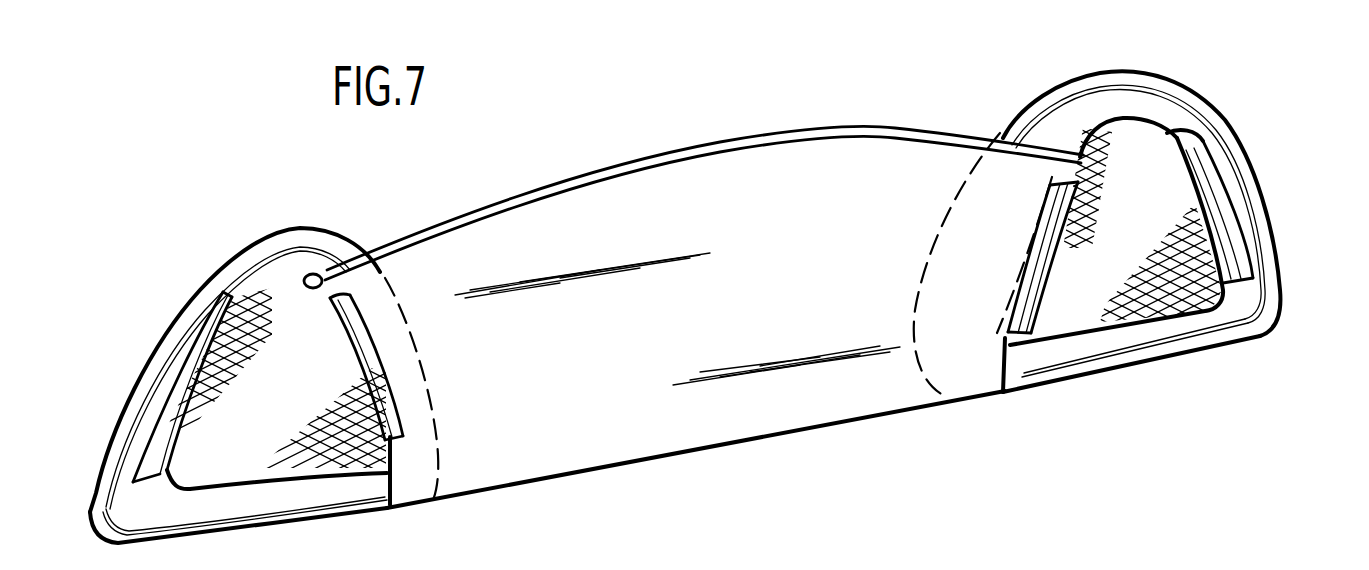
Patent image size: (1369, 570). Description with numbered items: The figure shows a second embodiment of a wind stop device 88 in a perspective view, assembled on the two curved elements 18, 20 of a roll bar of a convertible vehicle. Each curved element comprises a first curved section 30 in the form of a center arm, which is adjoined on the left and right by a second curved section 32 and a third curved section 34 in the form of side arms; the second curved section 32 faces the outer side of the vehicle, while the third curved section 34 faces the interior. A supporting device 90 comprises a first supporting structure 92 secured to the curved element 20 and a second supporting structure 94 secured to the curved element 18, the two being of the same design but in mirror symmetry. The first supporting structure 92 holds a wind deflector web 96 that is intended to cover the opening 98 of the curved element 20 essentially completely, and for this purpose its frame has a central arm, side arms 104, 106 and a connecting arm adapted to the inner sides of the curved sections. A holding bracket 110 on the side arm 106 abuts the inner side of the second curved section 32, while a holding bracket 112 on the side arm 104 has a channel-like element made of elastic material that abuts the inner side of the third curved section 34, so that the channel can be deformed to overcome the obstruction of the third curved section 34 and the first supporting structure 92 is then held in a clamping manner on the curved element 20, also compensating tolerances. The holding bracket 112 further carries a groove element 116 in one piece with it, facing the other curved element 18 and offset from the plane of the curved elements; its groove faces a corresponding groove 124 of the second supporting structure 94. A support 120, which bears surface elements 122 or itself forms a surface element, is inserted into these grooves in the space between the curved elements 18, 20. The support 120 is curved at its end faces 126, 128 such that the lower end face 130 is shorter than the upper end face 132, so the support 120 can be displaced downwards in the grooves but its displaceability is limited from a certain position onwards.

The curved element 18 is at (176, 292).
The curved element 20 is at (1252, 136).
The first curved section 30 is at (1097, 85).
The second curved section 32 is at (1242, 187).
The third curved section 34 is at (993, 197).
The wind stop device 88 is at (714, 125).
The supporting device 90 is at (352, 213).
The first supporting structure 92 is at (1180, 310).
The second supporting structure 94 is at (263, 467).
The wind deflector web 96 is at (1182, 137).
The opening 98 is at (1243, 140).
The side arm 104 is at (1000, 338).
The side arm 106 is at (1250, 327).
The holding bracket 110 is at (1235, 262).
The holding bracket 112 is at (1003, 265).
The groove element 116 is at (1060, 257).
The support 120 is at (632, 197).
The surface elements 122 is at (693, 193).
The groove 124 is at (392, 435).
The end face 126 is at (298, 272).
The end face 128 is at (1088, 156).
The lower end face 130 is at (583, 475).
The upper end face 132 is at (765, 133).